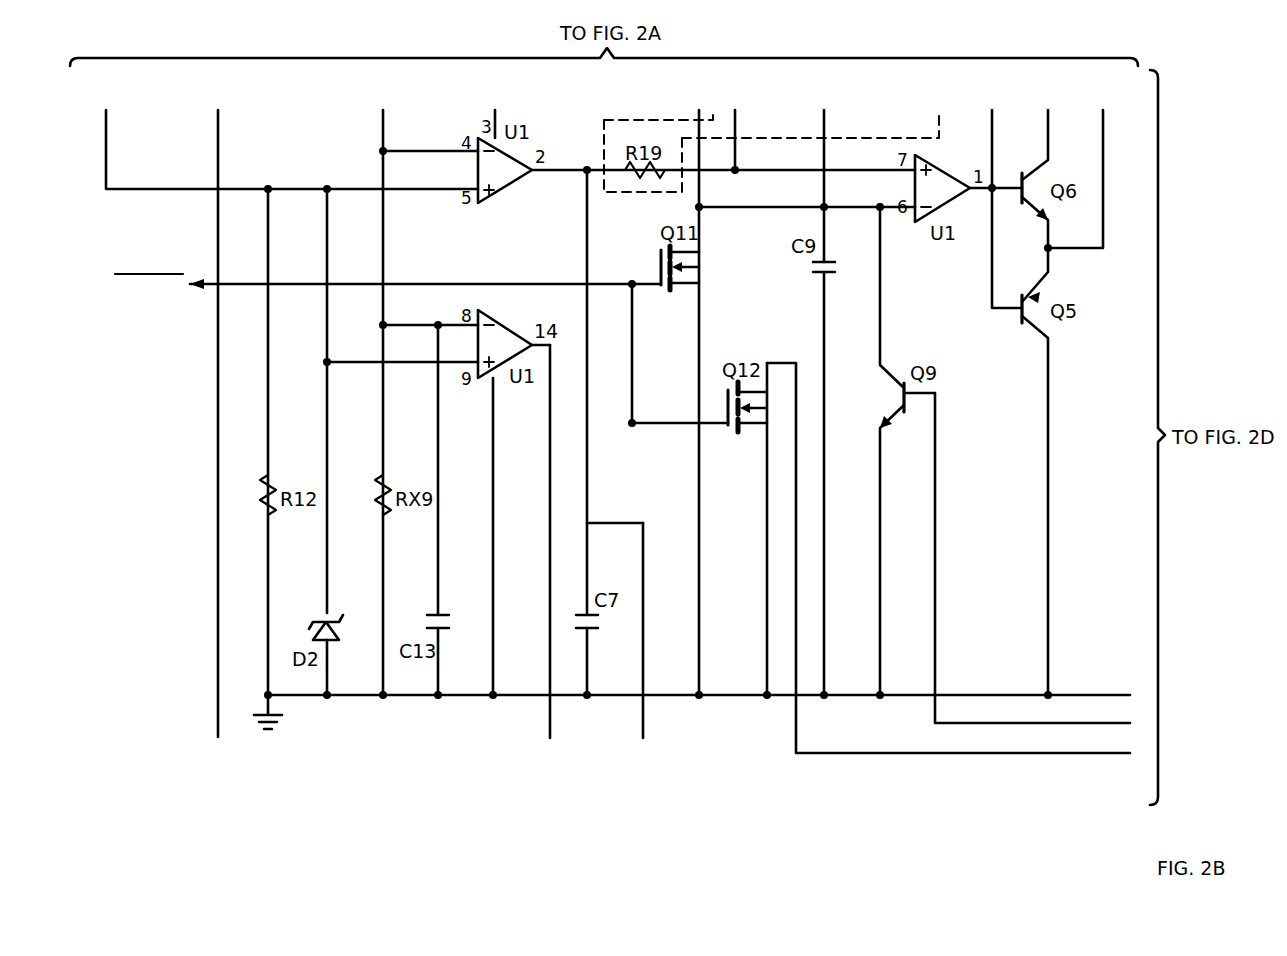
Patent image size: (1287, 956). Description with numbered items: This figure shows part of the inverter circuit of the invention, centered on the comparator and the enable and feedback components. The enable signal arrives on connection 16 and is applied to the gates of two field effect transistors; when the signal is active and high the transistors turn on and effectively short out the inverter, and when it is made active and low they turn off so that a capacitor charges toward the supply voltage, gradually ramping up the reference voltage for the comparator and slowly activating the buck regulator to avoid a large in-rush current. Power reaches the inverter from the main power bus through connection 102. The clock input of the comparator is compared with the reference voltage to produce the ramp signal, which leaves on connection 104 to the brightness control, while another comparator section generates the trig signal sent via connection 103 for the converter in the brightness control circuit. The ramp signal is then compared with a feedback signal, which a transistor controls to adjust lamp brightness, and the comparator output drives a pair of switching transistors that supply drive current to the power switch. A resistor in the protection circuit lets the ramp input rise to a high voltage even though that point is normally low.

The connection 16 is at (484, 284).
The connection 102 is at (218, 585).
The connection 103 is at (550, 710).
The connection 104 is at (645, 710).